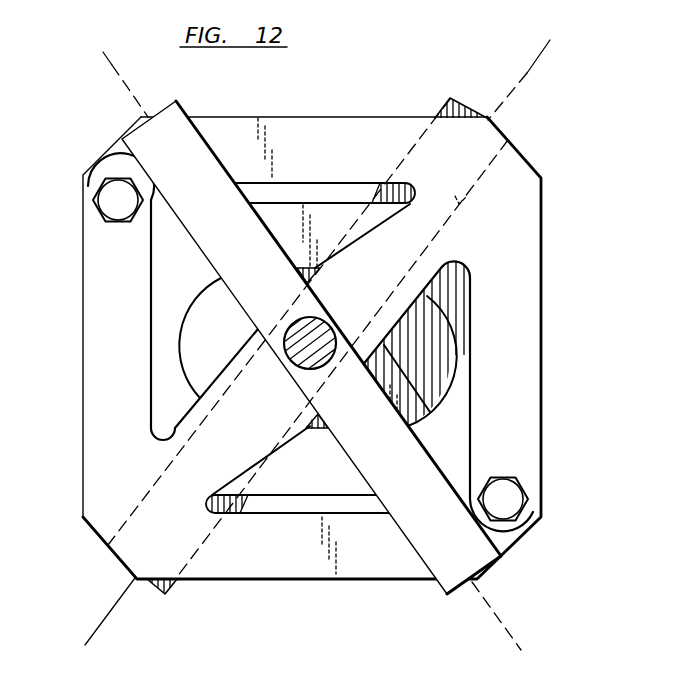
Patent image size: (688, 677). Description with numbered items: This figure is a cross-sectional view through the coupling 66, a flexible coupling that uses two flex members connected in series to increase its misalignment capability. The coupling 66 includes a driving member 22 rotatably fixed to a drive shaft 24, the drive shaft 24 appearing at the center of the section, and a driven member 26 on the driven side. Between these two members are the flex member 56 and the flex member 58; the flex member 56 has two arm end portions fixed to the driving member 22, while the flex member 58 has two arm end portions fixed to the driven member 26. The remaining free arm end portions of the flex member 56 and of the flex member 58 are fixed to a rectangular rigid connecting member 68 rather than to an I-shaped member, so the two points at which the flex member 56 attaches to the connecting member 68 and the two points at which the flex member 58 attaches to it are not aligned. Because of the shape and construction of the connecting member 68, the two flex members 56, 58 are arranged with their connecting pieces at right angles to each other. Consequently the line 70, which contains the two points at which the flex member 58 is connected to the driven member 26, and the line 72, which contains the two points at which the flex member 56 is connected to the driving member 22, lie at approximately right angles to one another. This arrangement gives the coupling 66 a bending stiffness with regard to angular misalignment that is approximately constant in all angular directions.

The driving member 22 is at (432, 562).
The drive shaft 24 is at (318, 328).
The driven member 26 is at (466, 203).
The flex member 56 is at (218, 568).
The flex member 58 is at (400, 373).
The coupling 66 is at (563, 213).
The rectangular rigid connecting member 68 is at (470, 367).
The line 70 is at (546, 56).
The line 72 is at (112, 66).